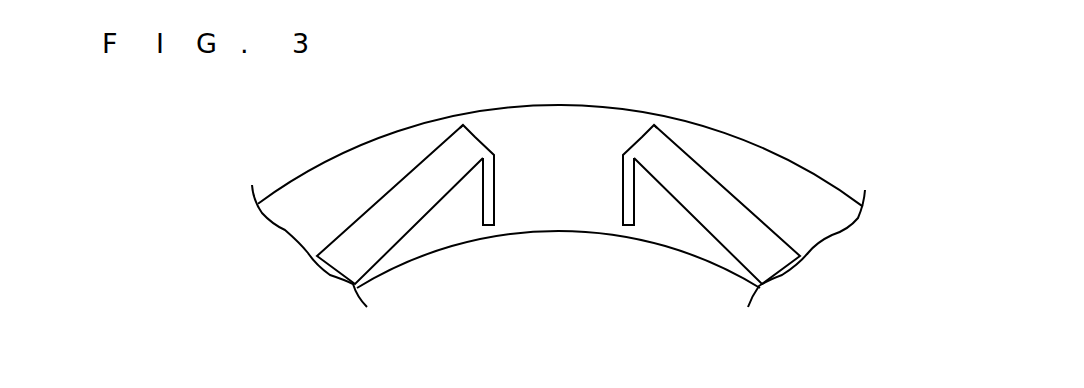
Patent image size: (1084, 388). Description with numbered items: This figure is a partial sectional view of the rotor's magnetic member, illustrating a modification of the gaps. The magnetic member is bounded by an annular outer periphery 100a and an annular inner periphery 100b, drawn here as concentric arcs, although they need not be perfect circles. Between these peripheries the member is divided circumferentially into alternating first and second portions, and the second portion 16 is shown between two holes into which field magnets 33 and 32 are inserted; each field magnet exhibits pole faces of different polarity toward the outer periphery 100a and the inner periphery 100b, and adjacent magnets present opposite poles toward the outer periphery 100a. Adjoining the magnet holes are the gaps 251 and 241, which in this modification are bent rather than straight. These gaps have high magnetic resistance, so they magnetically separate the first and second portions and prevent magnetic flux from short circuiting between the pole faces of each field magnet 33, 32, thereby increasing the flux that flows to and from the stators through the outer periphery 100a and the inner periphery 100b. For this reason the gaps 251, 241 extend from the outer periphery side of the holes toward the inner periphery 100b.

The second portion 16 is at (548, 217).
The outer periphery 100a is at (565, 107).
The inner periphery 100b is at (490, 228).
The field magnet 33 is at (340, 263).
The field magnet 32 is at (775, 258).
The gap 251 is at (475, 137).
The gap 241 is at (644, 137).